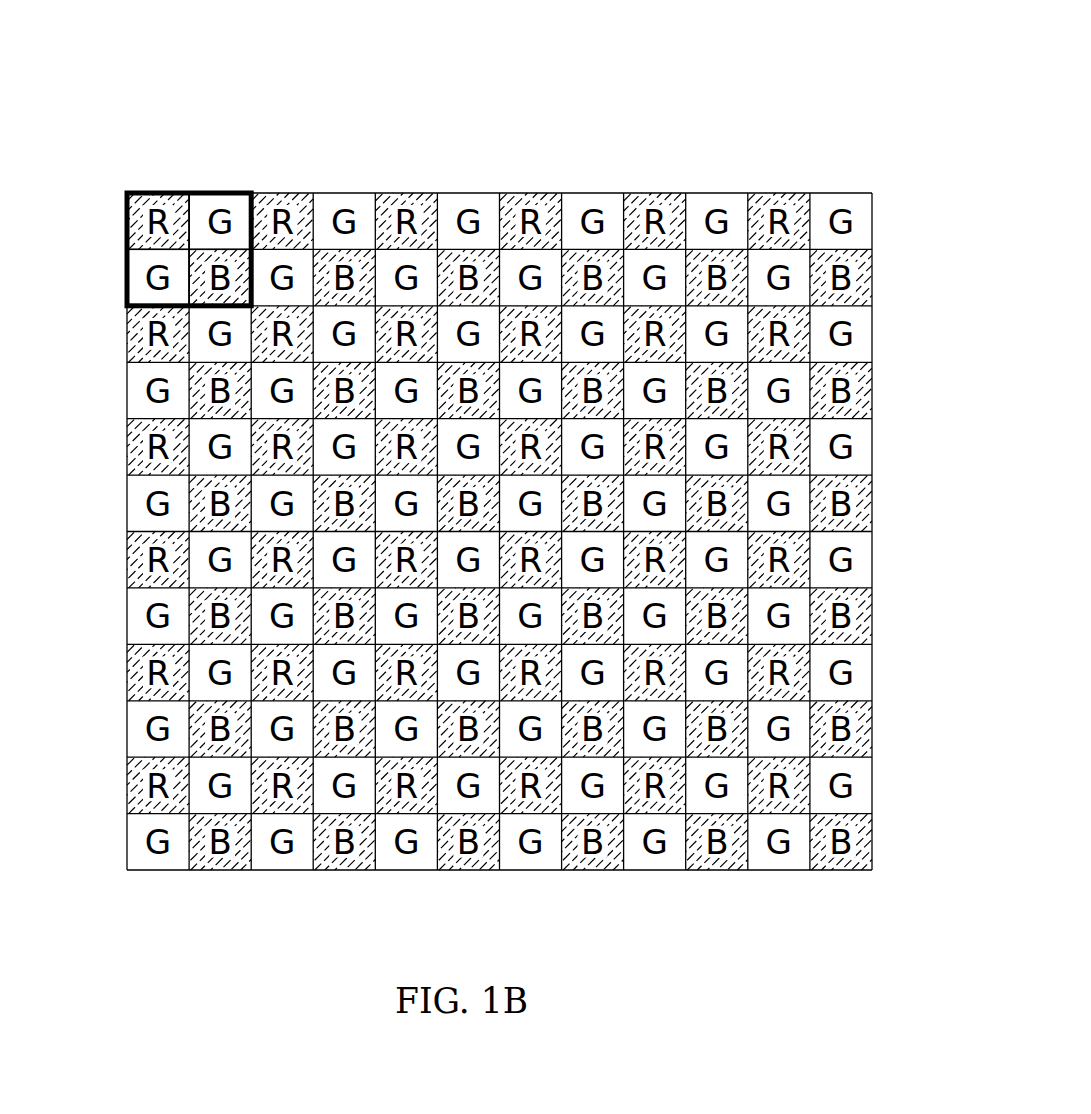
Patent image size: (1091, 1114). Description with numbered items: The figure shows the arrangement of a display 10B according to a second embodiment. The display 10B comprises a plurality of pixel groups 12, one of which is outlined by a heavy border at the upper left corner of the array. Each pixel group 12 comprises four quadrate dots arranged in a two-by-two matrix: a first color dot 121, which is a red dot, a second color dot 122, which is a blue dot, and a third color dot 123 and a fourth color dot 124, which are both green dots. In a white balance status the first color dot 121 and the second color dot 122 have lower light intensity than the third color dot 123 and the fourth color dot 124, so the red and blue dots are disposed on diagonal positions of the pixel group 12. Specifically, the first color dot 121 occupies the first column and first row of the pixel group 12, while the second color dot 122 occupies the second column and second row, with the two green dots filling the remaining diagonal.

The display 10B is at (496, 439).
The pixel group 12 is at (161, 174).
The first color dot 121 is at (167, 193).
The second color dot 122 is at (210, 302).
The third color dot 123 is at (133, 263).
The fourth color dot 124 is at (210, 203).